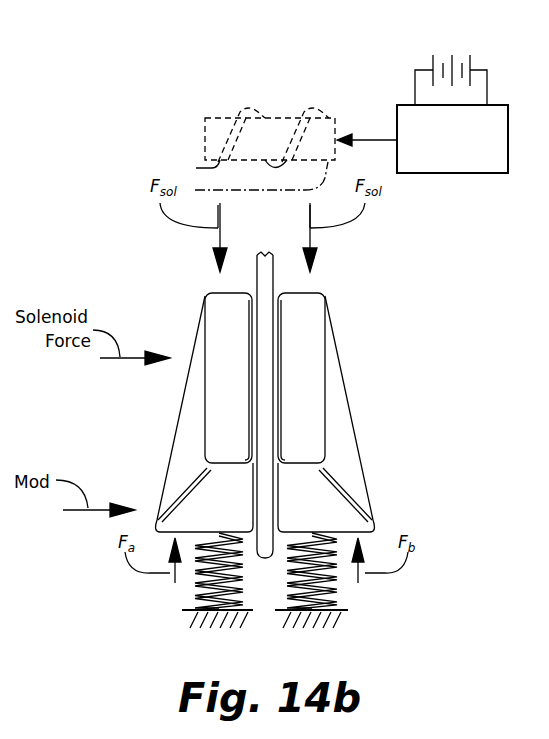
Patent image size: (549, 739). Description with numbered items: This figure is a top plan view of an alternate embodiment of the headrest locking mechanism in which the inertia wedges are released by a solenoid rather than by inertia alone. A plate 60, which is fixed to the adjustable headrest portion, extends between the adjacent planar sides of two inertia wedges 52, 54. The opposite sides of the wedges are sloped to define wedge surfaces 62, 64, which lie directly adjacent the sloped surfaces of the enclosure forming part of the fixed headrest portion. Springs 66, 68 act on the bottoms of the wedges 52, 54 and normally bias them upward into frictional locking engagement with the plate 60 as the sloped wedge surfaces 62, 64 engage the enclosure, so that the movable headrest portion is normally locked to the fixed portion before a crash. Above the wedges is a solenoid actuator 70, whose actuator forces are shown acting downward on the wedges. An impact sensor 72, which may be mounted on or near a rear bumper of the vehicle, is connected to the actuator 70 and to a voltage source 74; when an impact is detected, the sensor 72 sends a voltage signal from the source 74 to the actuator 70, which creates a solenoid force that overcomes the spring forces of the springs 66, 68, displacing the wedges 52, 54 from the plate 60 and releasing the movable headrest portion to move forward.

The solenoid actuator 70 is at (220, 117).
The impact sensor 72 is at (452, 173).
The voltage source 74 is at (472, 65).
The plate 60 is at (257, 278).
The inertia wedge 52 is at (227, 380).
The inertia wedge 54 is at (335, 380).
The wedge surface 62 is at (180, 455).
The wedge surface 64 is at (350, 455).
The spring 66 is at (195, 590).
The spring 68 is at (337, 585).